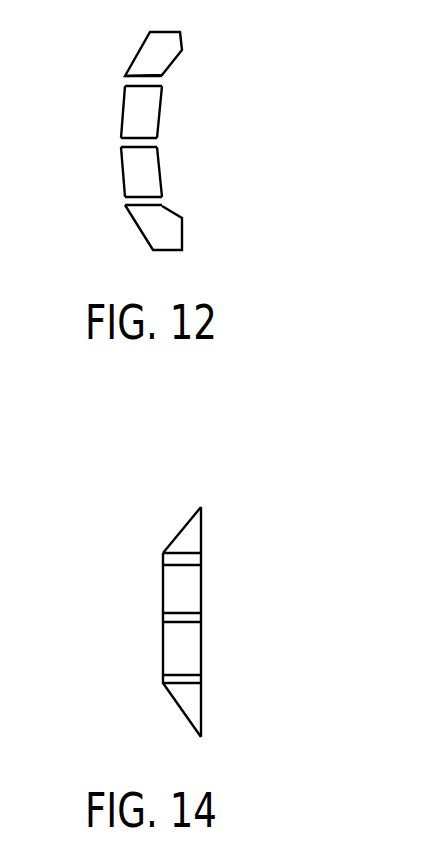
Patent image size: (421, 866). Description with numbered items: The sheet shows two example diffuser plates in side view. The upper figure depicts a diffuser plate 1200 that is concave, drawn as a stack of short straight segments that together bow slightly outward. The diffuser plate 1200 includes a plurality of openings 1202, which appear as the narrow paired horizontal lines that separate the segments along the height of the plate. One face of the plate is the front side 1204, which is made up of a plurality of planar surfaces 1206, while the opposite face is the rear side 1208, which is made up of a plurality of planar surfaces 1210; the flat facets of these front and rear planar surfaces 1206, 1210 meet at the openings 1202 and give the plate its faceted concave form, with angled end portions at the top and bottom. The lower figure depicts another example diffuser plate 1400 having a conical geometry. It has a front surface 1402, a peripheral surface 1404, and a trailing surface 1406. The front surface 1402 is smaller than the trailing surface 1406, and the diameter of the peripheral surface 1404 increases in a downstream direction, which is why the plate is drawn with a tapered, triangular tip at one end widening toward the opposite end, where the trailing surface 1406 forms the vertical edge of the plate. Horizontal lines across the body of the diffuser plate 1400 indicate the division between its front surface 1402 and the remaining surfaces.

In FIG. 12, the diffuser plate 1200 is at (136, 137).
In FIG. 12, the openings 1202 is at (166, 75).
In FIG. 12, the front side 1204 is at (118, 140).
In FIG. 12, the planar surfaces 1206 is at (140, 48).
In FIG. 12, the rear side 1208 is at (168, 137).
In FIG. 12, the planar surfaces 1210 is at (160, 108).
In FIG. 14, the diffuser plate 1400 is at (156, 620).
In FIG. 14, the front surface 1402 is at (163, 593).
In FIG. 14, the peripheral surface 1404 is at (180, 530).
In FIG. 14, the trailing surface 1406 is at (202, 530).